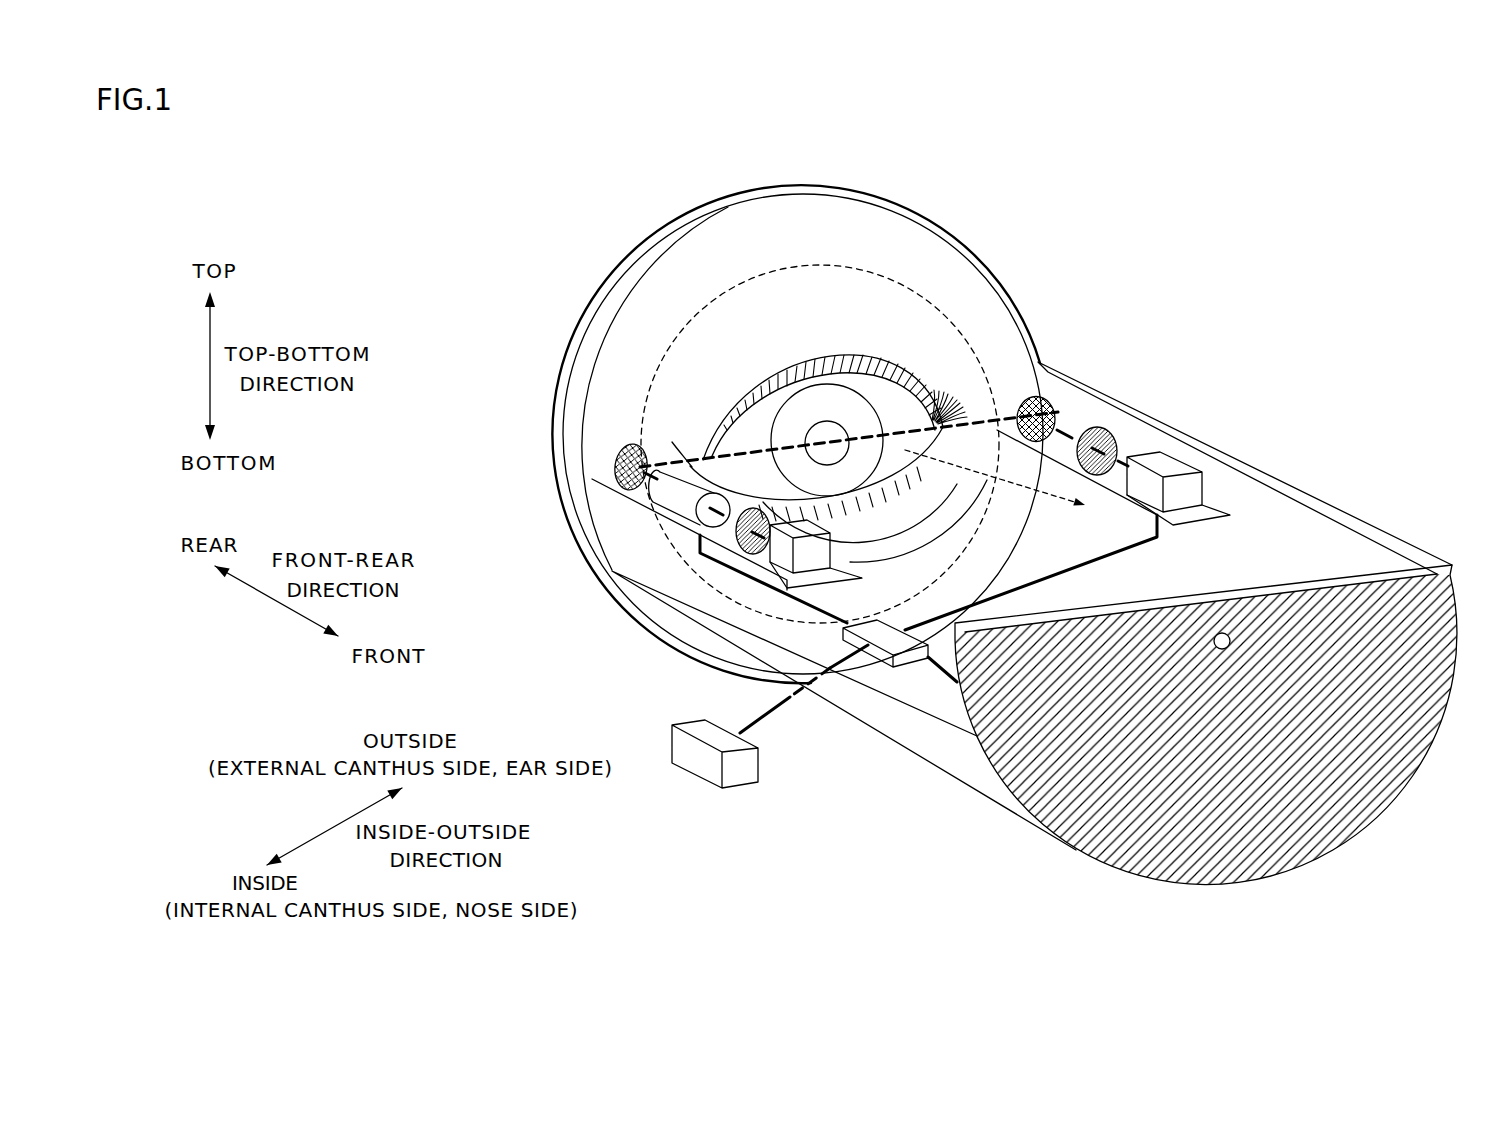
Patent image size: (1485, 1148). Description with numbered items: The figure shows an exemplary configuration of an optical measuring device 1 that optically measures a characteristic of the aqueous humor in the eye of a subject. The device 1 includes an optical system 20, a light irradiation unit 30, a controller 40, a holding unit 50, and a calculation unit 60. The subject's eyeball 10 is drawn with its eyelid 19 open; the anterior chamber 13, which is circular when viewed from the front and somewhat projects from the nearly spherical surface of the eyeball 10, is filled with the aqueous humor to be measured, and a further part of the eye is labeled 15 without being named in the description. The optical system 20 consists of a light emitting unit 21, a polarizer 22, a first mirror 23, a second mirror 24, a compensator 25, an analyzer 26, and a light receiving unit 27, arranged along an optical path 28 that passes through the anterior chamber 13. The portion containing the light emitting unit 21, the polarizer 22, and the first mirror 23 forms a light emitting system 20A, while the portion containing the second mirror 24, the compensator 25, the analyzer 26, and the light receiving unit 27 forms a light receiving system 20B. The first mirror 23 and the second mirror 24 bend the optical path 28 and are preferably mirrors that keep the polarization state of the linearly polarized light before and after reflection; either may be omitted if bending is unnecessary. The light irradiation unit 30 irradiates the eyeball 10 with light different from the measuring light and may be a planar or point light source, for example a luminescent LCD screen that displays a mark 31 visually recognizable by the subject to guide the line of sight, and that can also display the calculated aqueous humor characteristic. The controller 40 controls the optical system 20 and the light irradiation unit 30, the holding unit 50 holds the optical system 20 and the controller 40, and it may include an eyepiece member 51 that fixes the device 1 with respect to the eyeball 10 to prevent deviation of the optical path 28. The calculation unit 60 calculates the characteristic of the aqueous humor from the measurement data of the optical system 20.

The optical measuring device 1 is at (959, 548).
The eyeball 10 is at (780, 267).
The anterior chamber 13 is at (805, 407).
The pupil 15 is at (827, 415).
The eyelid 19 is at (717, 410).
The optical path 28 is at (920, 407).
The optical system 20 is at (857, 485).
The light emitting system 20A is at (1086, 449).
The light receiving system 20B is at (654, 572).
The light emitting unit 21 is at (1192, 439).
The polarizer 22 is at (1105, 428).
The first mirror 23 is at (1047, 395).
The second mirror 24 is at (614, 482).
The compensator 25 is at (655, 500).
The analyzer 26 is at (737, 533).
The light receiving unit 27 is at (741, 608).
The light irradiation unit 30 is at (1214, 738).
The mark (target) 31 is at (1217, 652).
The controller 40 is at (882, 657).
The holding unit 50 is at (1007, 810).
The eyepiece member 51 is at (566, 375).
The calculation unit 60 is at (698, 744).